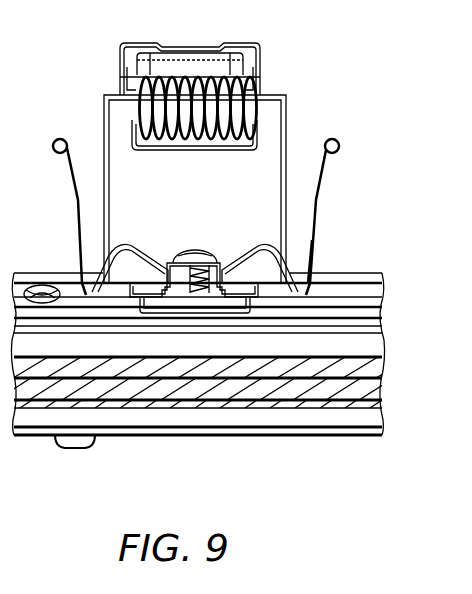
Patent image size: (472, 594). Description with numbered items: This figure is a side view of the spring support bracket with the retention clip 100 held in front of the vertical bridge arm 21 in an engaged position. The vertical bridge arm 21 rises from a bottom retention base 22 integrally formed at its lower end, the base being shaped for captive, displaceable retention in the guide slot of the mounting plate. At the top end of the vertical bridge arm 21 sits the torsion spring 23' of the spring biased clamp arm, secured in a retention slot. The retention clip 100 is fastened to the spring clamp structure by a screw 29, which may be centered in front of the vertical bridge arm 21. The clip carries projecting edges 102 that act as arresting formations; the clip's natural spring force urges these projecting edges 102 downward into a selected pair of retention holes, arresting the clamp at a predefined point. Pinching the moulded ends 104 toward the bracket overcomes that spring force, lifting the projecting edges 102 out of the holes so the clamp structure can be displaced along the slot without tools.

The retention clip 100 is at (75, 134).
The torsion spring 23' is at (230, 75).
The vertical bridge arm 21 is at (268, 166).
The moulded ends 104 is at (343, 148).
The projecting edges 102 is at (318, 232).
The screw 29 is at (205, 248).
The bottom retention base 22 is at (200, 266).